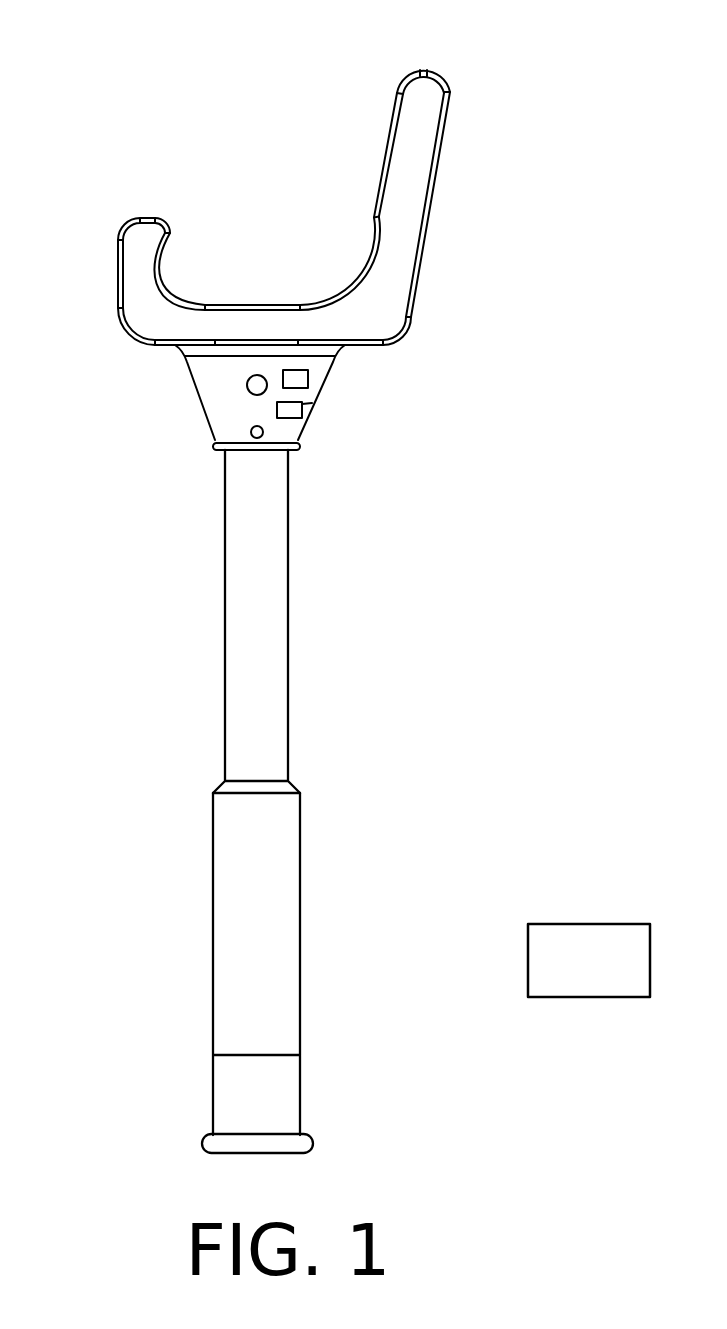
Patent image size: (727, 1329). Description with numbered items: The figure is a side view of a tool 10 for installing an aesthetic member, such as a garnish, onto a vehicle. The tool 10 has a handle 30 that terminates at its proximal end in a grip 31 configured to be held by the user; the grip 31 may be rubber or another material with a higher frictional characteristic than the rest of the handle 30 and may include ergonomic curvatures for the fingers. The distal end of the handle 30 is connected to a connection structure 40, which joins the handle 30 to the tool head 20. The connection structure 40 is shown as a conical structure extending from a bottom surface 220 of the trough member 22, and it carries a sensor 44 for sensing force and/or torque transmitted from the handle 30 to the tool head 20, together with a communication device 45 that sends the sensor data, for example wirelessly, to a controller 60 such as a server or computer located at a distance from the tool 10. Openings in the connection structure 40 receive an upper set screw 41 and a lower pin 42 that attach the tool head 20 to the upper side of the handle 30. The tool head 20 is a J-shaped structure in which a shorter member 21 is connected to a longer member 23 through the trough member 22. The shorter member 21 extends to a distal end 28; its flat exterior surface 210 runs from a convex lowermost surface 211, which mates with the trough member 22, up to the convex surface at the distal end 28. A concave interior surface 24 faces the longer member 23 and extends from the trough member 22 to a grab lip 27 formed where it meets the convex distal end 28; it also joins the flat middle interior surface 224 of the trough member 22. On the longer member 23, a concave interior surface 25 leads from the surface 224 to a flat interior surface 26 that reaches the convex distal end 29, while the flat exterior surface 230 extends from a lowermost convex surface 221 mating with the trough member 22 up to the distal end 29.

The tool 10 is at (518, 231).
The tool head 20 is at (272, 201).
The shorter member 21 is at (133, 264).
The trough member 22 is at (220, 325).
The longer member 23 is at (411, 165).
The concave interior surface 24 is at (165, 265).
The concave interior surface 25 is at (292, 263).
The flat interior surface 26 is at (390, 126).
The grab lip 27 is at (169, 229).
The distal end 28 is at (147, 218).
The distal end 29 is at (427, 70).
The handle 30 is at (290, 607).
The grip 31 is at (302, 900).
The connection structure 40 is at (297, 412).
The upper set screw 41 is at (248, 385).
The lower pin 42 is at (251, 431).
The sensor 44 is at (304, 380).
The communication device 45 is at (312, 403).
The controller 60 is at (588, 924).
The exterior surface 210 is at (118, 284).
The convex lowermost surface 211 is at (122, 328).
The bottom surface 220 is at (321, 352).
The lowermost convex surface 221 is at (402, 336).
The middle interior surface 224 is at (240, 303).
The exterior surface 230 is at (418, 284).